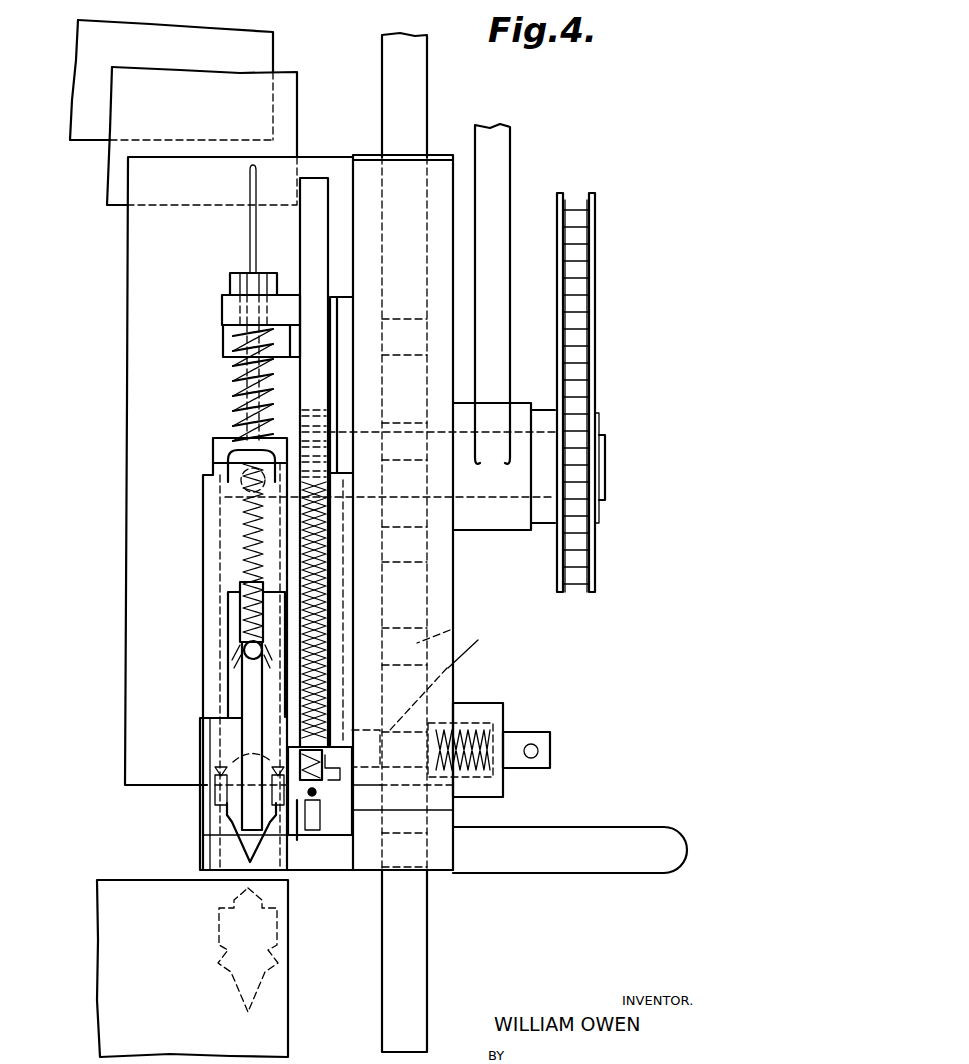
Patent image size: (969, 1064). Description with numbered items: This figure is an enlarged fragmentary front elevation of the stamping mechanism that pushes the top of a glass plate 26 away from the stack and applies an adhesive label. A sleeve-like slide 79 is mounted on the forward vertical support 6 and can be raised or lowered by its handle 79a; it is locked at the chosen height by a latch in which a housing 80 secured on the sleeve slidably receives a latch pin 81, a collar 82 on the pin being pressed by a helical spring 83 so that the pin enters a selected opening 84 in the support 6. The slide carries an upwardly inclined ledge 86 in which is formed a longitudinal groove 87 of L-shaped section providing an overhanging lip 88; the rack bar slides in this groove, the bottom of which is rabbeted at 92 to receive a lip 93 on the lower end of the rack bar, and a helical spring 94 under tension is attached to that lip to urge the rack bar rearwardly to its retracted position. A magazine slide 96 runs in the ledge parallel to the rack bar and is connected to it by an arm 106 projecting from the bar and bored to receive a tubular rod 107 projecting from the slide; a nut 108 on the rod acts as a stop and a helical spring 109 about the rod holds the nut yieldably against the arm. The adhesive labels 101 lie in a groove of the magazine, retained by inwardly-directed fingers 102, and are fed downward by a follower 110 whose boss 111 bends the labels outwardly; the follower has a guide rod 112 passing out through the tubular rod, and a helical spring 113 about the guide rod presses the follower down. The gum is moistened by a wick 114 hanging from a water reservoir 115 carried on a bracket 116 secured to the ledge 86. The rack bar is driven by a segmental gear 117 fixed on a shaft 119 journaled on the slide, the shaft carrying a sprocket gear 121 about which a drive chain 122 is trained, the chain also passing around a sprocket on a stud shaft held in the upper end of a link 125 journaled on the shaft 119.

The vertical supports 6 is at (412, 80).
The sleeve-like slide 79 is at (437, 157).
The handle 79a is at (635, 840).
The segmental gear 117 is at (313, 190).
The link 125 is at (500, 160).
The sprocket gear 121 is at (598, 412).
The shaft 119 is at (605, 457).
The drive chain 122 is at (598, 205).
The guide rod 112 is at (250, 243).
The nut 108 is at (232, 290).
The arm 106 is at (222, 313).
The helical spring 109 is at (235, 362).
The tubular rod 107 is at (235, 392).
The magazine slide 96 is at (225, 510).
The ledge 86 is at (205, 560).
The helical spring 113 is at (246, 555).
The follower 110 is at (238, 632).
The boss 111 is at (243, 641).
The reservoir 115 is at (232, 675).
The wick 114 is at (243, 690).
The bracket 116 is at (200, 740).
The inwardly-directed fingers 102 is at (218, 790).
The adhesive labels 101 is at (230, 655).
The overhanging lip 88 is at (340, 755).
The longitudinal groove 87 is at (340, 770).
The helical spring 94 is at (322, 778).
The lip 93 is at (298, 840).
The rabbet 92 is at (316, 822).
The opening 84 is at (441, 675).
The housing 80 is at (502, 795).
The collar 82 is at (443, 715).
The helical spring 83 is at (480, 725).
The latch pin 81 is at (537, 742).
The sheets of glass 26 is at (273, 1013).